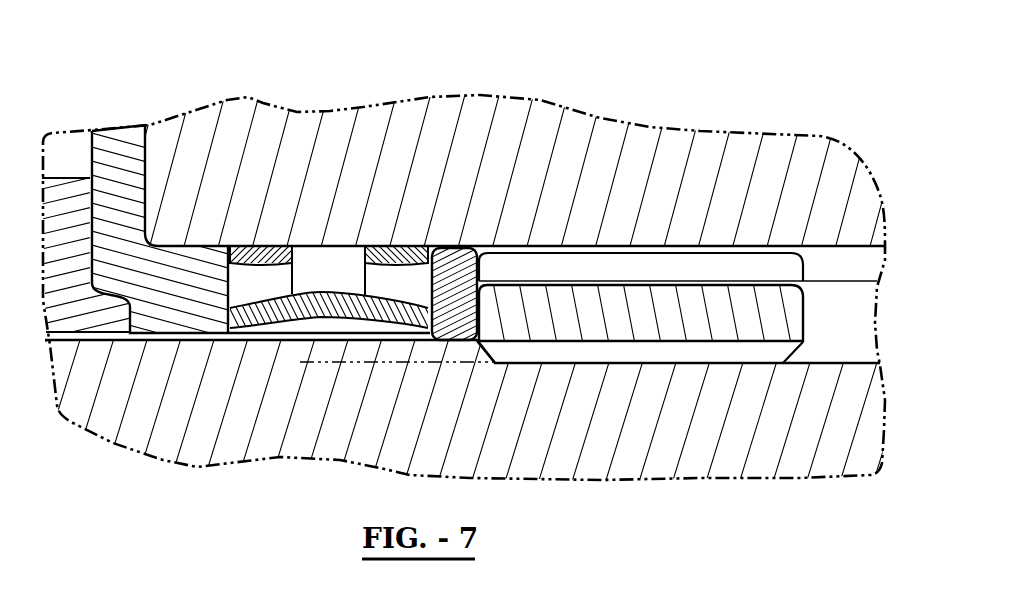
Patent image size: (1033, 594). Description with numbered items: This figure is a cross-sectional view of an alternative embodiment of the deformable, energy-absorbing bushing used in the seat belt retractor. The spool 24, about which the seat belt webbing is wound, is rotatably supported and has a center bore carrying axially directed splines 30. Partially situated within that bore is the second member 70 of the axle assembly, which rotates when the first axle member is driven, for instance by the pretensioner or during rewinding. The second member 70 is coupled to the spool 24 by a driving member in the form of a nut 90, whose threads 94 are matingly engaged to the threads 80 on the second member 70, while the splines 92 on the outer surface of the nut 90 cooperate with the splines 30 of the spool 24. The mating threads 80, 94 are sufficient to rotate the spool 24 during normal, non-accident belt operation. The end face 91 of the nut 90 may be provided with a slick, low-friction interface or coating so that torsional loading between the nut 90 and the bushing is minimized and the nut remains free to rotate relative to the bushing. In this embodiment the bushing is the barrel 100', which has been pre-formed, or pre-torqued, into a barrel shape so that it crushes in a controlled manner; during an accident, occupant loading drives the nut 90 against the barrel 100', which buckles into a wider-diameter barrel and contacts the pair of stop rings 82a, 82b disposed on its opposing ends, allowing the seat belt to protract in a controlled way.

The spool 24 is at (402, 118).
The splines 30 is at (867, 267).
The second member 70 is at (383, 421).
The threads 80 is at (687, 350).
The stop ring 82a is at (253, 244).
The stop ring 82b is at (400, 244).
The nut 90 is at (558, 305).
The end face 91 is at (455, 323).
The splines 92 is at (650, 263).
The threads 94 is at (562, 350).
The barrel 100' is at (331, 322).